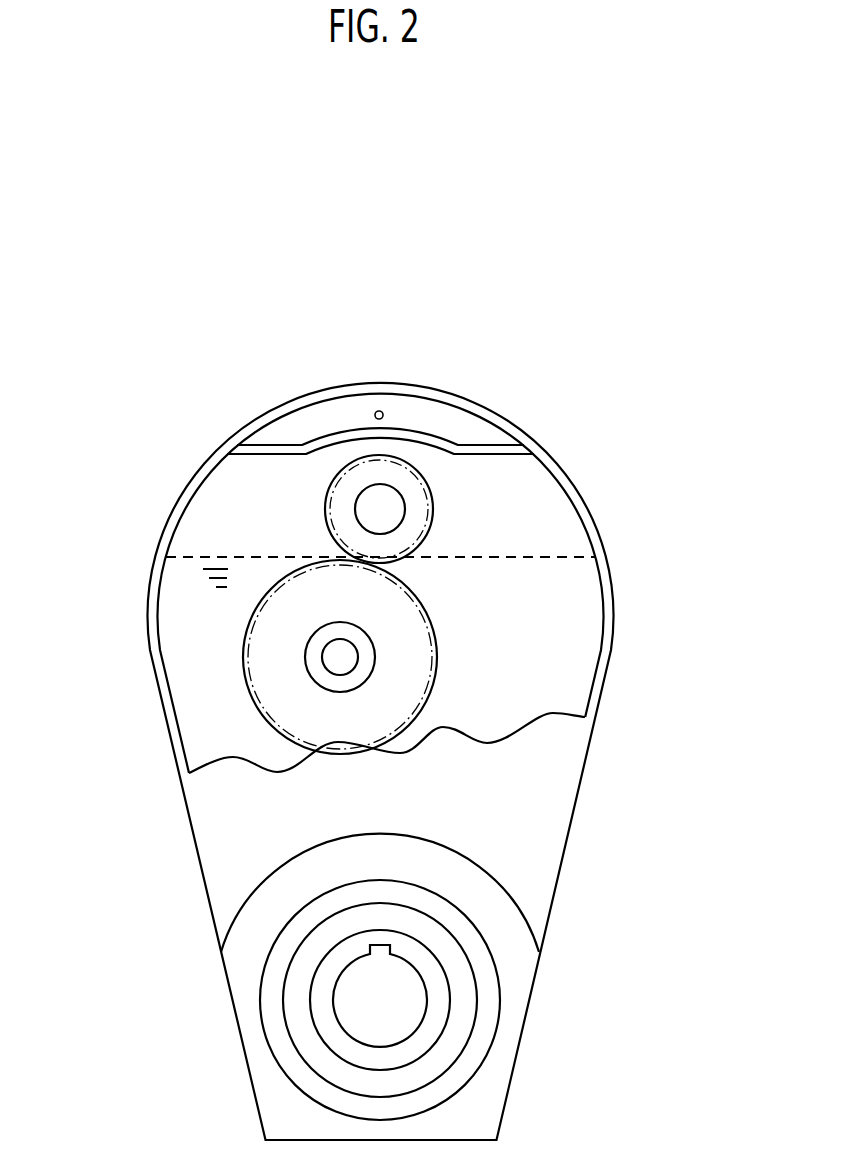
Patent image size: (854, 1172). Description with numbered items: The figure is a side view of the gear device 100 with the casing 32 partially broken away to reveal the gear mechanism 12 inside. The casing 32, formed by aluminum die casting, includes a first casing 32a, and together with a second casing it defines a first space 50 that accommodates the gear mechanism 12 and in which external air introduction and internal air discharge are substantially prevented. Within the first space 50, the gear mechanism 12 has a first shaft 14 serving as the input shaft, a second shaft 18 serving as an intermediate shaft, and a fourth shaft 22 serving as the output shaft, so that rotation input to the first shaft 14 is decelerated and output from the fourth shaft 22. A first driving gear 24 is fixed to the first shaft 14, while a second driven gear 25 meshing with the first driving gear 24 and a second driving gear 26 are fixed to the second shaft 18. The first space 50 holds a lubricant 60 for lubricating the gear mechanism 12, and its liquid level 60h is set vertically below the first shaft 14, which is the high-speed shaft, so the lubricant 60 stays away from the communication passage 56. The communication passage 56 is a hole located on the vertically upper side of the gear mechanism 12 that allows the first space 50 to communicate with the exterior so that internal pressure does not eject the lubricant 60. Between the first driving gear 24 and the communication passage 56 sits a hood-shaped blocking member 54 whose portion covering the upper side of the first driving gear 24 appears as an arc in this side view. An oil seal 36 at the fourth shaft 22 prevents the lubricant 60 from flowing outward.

The gear device 100 is at (110, 907).
The gear mechanism 12 is at (524, 491).
The first shaft 14 is at (378, 510).
The second shaft 18 is at (340, 658).
The fourth shaft 22 is at (433, 995).
The first driving gear 24 is at (422, 513).
The second driven gear 25 is at (423, 648).
The second driving gear 26 is at (317, 650).
The casing 32 is at (630, 628).
The first casing 32a is at (560, 780).
The oil seal 36 is at (298, 1015).
The first space 50 is at (557, 531).
The blocking member 54 is at (403, 437).
The communication passage 56 is at (375, 411).
The lubricant 60 is at (203, 587).
The liquid level 60h is at (278, 553).